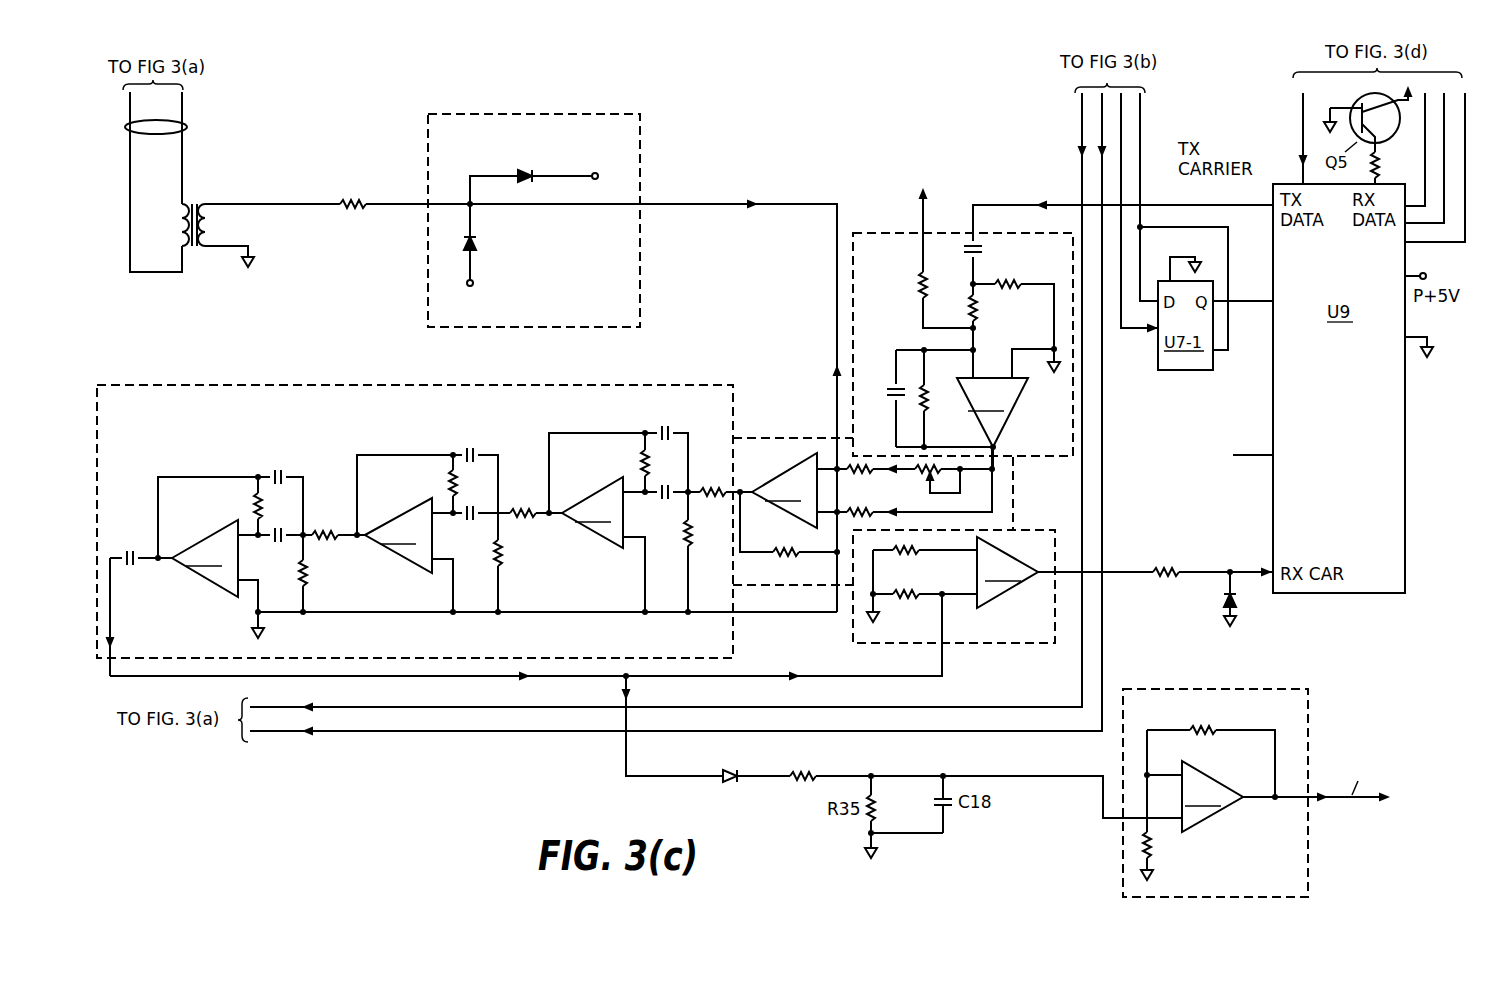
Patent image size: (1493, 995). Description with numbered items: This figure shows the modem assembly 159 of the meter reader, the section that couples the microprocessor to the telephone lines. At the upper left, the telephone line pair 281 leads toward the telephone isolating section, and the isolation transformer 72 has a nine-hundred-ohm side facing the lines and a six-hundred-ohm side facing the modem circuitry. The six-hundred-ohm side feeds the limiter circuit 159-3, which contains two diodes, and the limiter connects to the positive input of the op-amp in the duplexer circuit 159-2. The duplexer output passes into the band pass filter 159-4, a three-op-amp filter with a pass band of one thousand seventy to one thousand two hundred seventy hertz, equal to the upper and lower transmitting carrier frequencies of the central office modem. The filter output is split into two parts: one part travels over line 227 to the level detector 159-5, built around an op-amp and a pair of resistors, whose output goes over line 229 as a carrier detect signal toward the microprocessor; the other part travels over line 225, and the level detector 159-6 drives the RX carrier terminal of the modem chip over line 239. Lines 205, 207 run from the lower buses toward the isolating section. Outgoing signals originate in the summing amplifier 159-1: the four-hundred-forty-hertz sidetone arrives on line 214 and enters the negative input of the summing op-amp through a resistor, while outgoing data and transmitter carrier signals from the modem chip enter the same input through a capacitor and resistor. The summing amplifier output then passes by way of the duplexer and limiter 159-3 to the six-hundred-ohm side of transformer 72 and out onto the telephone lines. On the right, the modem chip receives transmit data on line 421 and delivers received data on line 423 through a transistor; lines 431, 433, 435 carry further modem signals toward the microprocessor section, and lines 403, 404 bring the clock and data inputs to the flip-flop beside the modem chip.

The telephone line cable loop 281 is at (187, 126).
The line transformer 72 is at (203, 252).
The limiter circuit 159-3 is at (575, 311).
The band pass filter circuit 159-4 is at (467, 530).
The duplexer circuit 159-2 is at (778, 437).
The summing amplifier circuit 159-1 is at (1063, 317).
The level detector circuit 159-6 is at (1030, 645).
The level detector circuit 159-5 is at (1268, 688).
The modem assembly 159 is at (463, 793).
The signal line to FIG 3(a) 205 is at (418, 705).
The signal line to FIG 3(a) 207 is at (404, 733).
The input line from FIG 3(b) 214 is at (918, 207).
The line 225 is at (892, 678).
The line 227 is at (627, 768).
The line 229 is at (1330, 800).
The receive carrier line 239 is at (1127, 575).
The clock line to FIG 3(b) 403 is at (1121, 112).
The data line to FIG 3(b) 404 is at (1140, 137).
The transmit data input line 421 is at (1303, 117).
The transistor output line 423 is at (1406, 100).
The line to FIG 3(d) 431 is at (1425, 125).
The line to FIG 3(d) 433 is at (1410, 226).
The line to FIG 3(d) 435 is at (1408, 244).